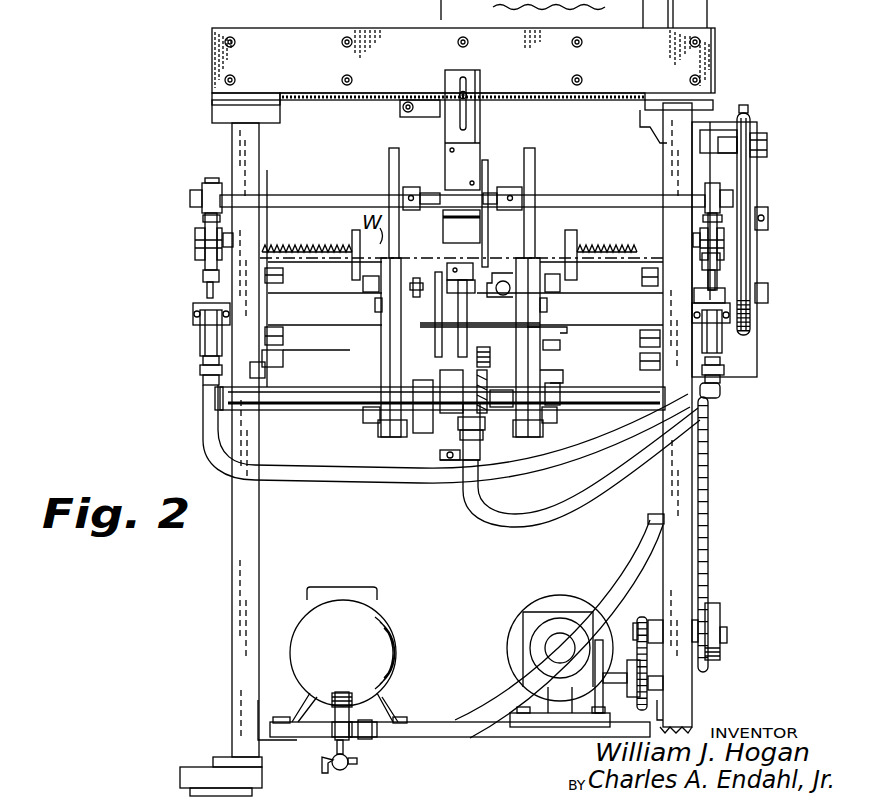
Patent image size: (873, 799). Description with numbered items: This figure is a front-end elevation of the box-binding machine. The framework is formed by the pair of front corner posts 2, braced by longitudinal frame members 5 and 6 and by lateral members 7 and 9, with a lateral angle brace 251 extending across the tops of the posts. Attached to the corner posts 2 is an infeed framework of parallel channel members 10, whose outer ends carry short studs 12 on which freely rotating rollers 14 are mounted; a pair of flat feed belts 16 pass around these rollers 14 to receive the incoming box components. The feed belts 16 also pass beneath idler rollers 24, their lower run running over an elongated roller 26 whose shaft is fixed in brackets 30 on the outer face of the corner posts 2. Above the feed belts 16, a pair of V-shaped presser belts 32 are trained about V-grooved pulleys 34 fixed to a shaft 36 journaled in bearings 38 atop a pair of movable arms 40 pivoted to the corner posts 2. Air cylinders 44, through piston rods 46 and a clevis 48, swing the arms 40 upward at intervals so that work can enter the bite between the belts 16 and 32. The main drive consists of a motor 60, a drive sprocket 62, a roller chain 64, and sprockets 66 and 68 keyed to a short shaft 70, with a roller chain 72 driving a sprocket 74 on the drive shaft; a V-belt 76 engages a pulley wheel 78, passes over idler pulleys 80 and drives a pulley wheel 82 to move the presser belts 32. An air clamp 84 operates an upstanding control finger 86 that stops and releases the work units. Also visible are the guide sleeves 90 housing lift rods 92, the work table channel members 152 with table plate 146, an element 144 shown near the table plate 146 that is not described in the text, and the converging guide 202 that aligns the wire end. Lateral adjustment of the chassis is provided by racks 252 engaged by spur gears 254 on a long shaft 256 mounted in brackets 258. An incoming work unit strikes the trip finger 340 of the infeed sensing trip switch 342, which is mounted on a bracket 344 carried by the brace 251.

The corner posts 2 is at (232, 566).
The longitudinal frame members 5 is at (273, 740).
The longitudinal frame members 6 is at (262, 373).
The lateral members 7 is at (302, 455).
The lateral members 9 is at (292, 296).
The channel members 10 is at (500, 275).
The studs 12 is at (365, 284).
The rollers 14 is at (383, 300).
The feed belts 16 is at (533, 317).
The idler rollers 24 is at (380, 427).
The elongated roller 26 is at (293, 408).
The brackets 30 is at (218, 397).
The presser belts 32 is at (392, 147).
The V-grooved pulleys 34 is at (390, 165).
The shaft 36 is at (341, 196).
The bearings 38 is at (208, 186).
The arms 40 is at (206, 228).
The air cylinders 44 is at (206, 335).
The piston rods 46 is at (208, 288).
The clevis 48 is at (206, 276).
The motor 60 is at (548, 597).
The drive sprocket 62 is at (632, 682).
The roller chain 64 is at (653, 683).
The sprocket 66 is at (657, 605).
The sprocket 68 is at (713, 603).
The short shaft 70 is at (724, 627).
The roller chain 72 is at (708, 538).
The sprocket 74 is at (697, 288).
The V-belt 76 is at (747, 256).
The pulley wheel 78 is at (755, 310).
The idler pulleys 80 is at (765, 153).
The pulley wheel 82 is at (758, 210).
The air clamp 84 is at (465, 412).
The control finger 86 is at (463, 298).
The guide sleeves 90 is at (558, 376).
The lift rods 92 is at (492, 360).
The stop 144 is at (558, 343).
The table plate 146 is at (563, 328).
The channel members 152 is at (410, 372).
The converging guide 202 is at (453, 263).
The lateral brace 251 is at (384, 10).
The racks 252 is at (327, 103).
The spur gears 254 is at (392, 105).
The long shaft 256 is at (422, 108).
The brackets 258 is at (425, 107).
The trip finger 340 is at (490, 237).
The trip switch 342 is at (470, 157).
The bracket 344 is at (445, 75).